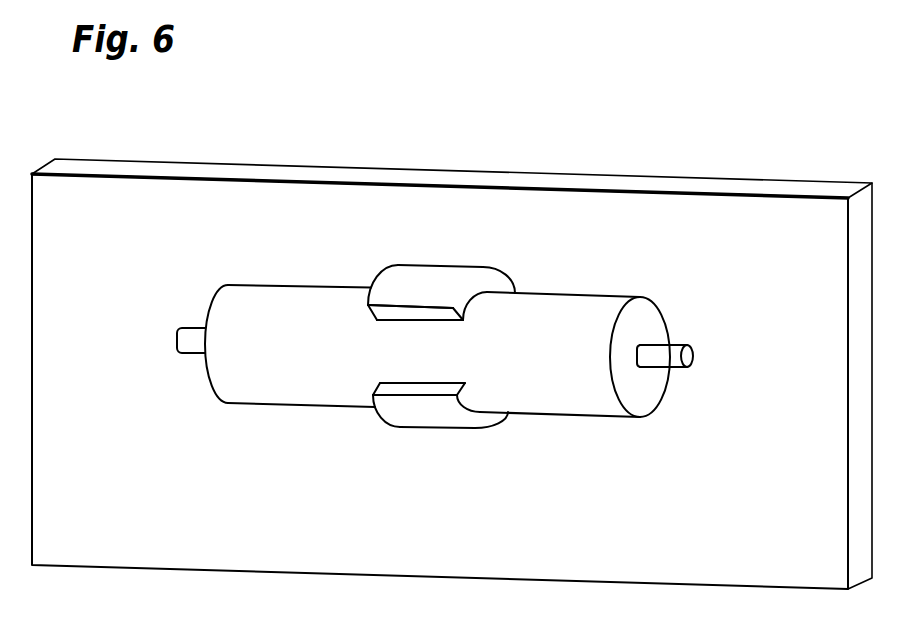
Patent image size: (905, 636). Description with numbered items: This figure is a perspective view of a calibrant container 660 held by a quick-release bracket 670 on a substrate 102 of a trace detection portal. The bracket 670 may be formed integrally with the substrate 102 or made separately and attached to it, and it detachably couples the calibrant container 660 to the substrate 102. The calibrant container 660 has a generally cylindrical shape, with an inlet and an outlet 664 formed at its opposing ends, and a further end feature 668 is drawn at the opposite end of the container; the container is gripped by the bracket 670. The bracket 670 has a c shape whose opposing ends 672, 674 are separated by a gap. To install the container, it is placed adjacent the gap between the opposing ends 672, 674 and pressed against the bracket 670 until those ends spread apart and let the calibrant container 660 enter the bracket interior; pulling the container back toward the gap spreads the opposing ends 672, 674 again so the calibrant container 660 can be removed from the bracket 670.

The substrate 102 is at (767, 551).
The calibrant container 660 is at (265, 285).
The outlet 664 is at (175, 353).
The right axle pin 668 is at (690, 370).
The quick-release bracket 670 is at (455, 263).
The opposing end 672 is at (398, 312).
The opposing end 674 is at (450, 387).